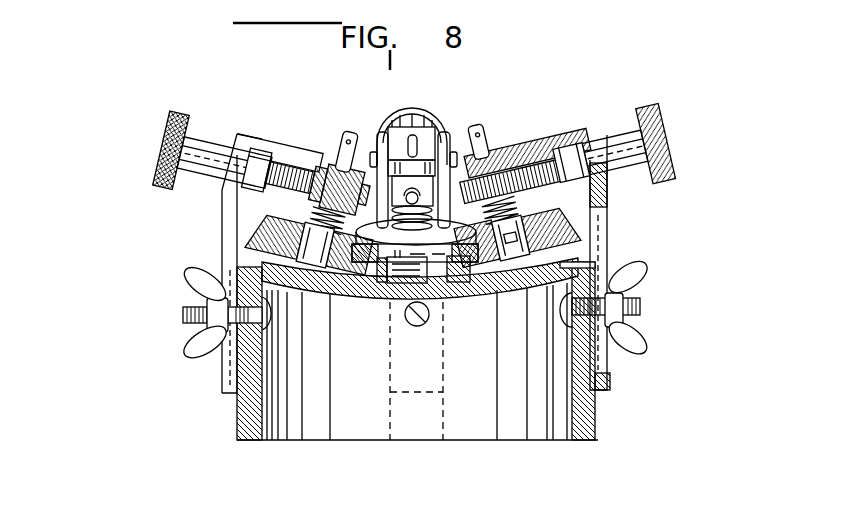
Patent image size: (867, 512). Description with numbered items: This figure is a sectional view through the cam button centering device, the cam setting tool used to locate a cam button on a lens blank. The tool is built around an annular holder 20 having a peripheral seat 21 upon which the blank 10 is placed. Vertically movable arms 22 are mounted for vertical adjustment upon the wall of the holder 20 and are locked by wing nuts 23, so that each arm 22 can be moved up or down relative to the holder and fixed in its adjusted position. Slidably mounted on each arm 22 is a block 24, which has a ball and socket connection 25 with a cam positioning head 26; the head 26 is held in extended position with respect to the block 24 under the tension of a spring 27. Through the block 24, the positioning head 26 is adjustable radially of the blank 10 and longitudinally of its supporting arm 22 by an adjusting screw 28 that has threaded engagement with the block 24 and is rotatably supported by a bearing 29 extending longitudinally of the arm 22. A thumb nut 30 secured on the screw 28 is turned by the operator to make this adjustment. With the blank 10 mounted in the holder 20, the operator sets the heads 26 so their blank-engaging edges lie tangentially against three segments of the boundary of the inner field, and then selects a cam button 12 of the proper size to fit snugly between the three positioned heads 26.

The blank 10 is at (483, 298).
The cam button 12 is at (446, 297).
The annular holder 20 is at (248, 423).
The peripheral seat 21 is at (572, 266).
The vertically movable arm 22 is at (227, 207).
The wing nut 23 is at (192, 357).
The block 24 is at (326, 163).
The ball and socket connection 25 is at (322, 297).
The cam positioning head 26 is at (250, 231).
The spring 27 is at (300, 213).
The adjusting screw 28 is at (288, 168).
The bearing 29 is at (248, 134).
The thumb nut 30 is at (179, 112).